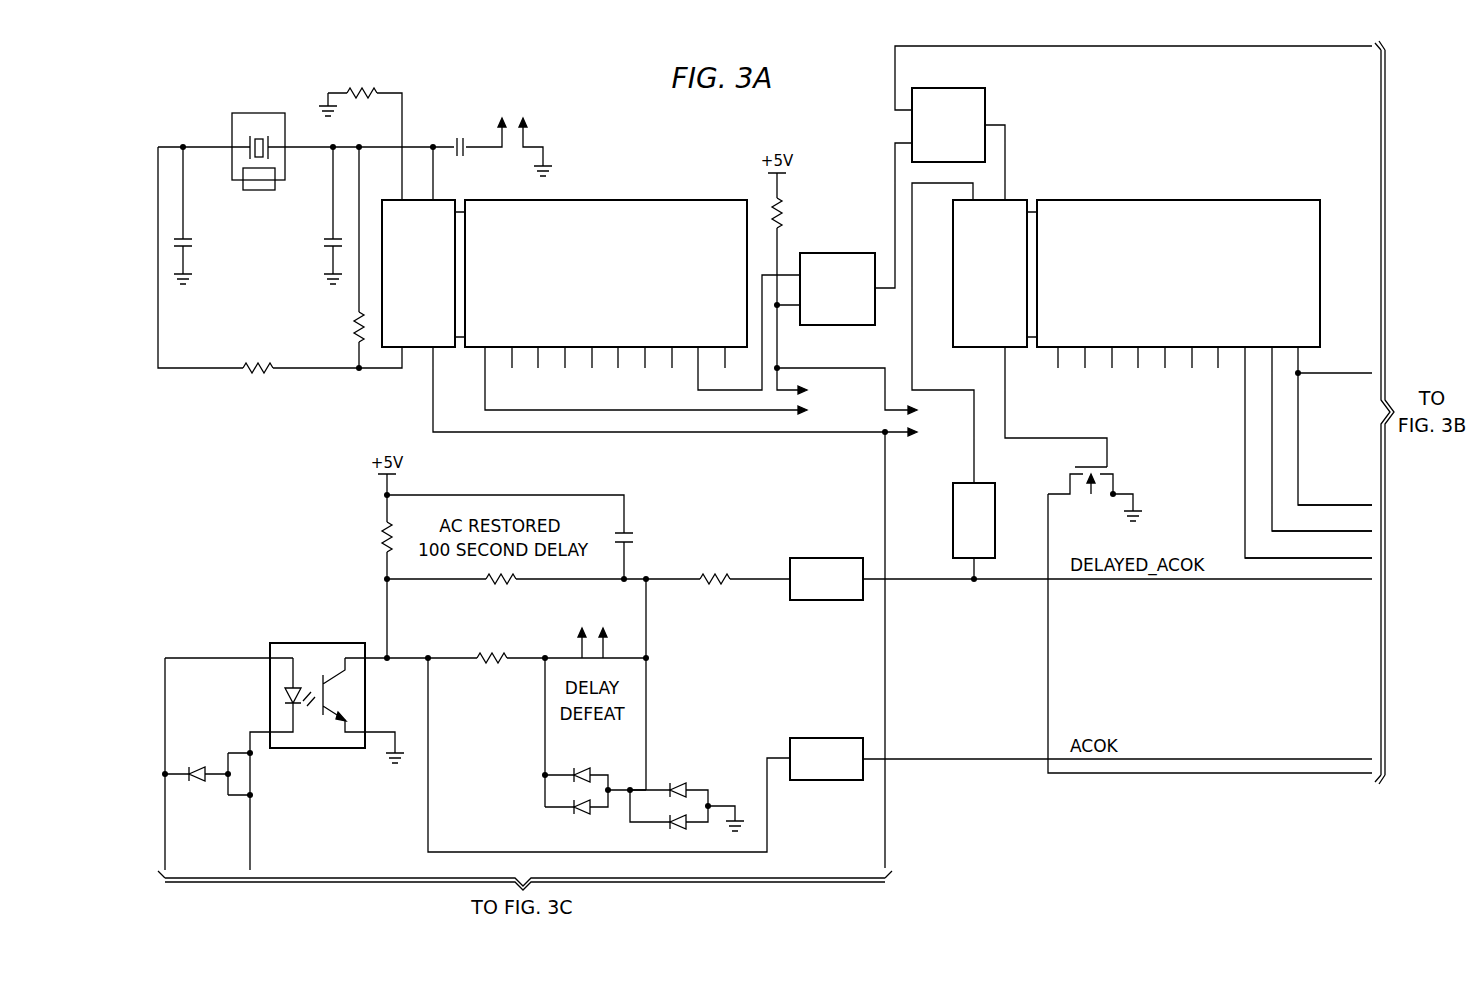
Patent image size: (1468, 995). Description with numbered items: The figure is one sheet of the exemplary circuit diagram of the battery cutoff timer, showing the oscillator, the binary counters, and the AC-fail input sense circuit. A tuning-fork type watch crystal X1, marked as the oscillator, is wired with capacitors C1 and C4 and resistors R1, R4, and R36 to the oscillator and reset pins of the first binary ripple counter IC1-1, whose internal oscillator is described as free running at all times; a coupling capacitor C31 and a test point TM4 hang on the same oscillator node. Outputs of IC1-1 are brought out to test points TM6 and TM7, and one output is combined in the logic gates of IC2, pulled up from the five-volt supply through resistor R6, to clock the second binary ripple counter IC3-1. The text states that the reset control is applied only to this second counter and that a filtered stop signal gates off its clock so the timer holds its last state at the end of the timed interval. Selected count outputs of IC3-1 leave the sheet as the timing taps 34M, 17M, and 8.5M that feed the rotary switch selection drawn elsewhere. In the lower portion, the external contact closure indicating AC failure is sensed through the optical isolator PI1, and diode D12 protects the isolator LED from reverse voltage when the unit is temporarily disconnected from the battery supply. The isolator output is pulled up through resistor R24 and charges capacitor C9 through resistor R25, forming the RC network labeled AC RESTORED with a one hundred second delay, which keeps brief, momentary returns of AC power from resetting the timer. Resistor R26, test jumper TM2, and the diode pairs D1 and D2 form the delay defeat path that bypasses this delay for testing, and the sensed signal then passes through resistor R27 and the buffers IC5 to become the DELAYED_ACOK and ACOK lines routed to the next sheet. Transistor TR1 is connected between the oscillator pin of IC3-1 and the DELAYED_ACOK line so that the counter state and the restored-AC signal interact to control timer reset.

The crystal oscillator X1 is at (258, 151).
The capacitor C1 is at (195, 243).
The capacitor C4 is at (321, 243).
The resistor R4 is at (347, 327).
The resistor R1 is at (258, 358).
The resistor R36 is at (362, 83).
The capacitor C31 is at (460, 136).
The test point TM4 is at (511, 110).
The counter integrated circuit IC1-1 is at (564, 262).
The logic gate integrated circuit IC2 is at (892, 196).
The resistor R6 is at (789, 213).
The counter integrated circuit IC3-1 is at (1136, 262).
The test point TM6 is at (822, 400).
The test point TM7 is at (932, 421).
The buffer/inverter integrated circuit IC5 is at (892, 631).
The transistor TR1 is at (1090, 492).
The 34 minute output line 34M is at (1335, 495).
The 17 minute output line 17M is at (1322, 521).
The 8.5 minute output line 8.5M is at (1308, 548).
The resistor R24 is at (370, 537).
The capacitor C9 is at (636, 539).
The resistor R27 is at (715, 569).
The resistor R25 is at (502, 591).
The resistor R26 is at (492, 670).
The test point (delay defeat) TM2 is at (591, 621).
The optoisolator PI1 is at (322, 745).
The diode D12 is at (216, 770).
The diode pair D1 is at (576, 778).
The diode pair D2 is at (669, 793).